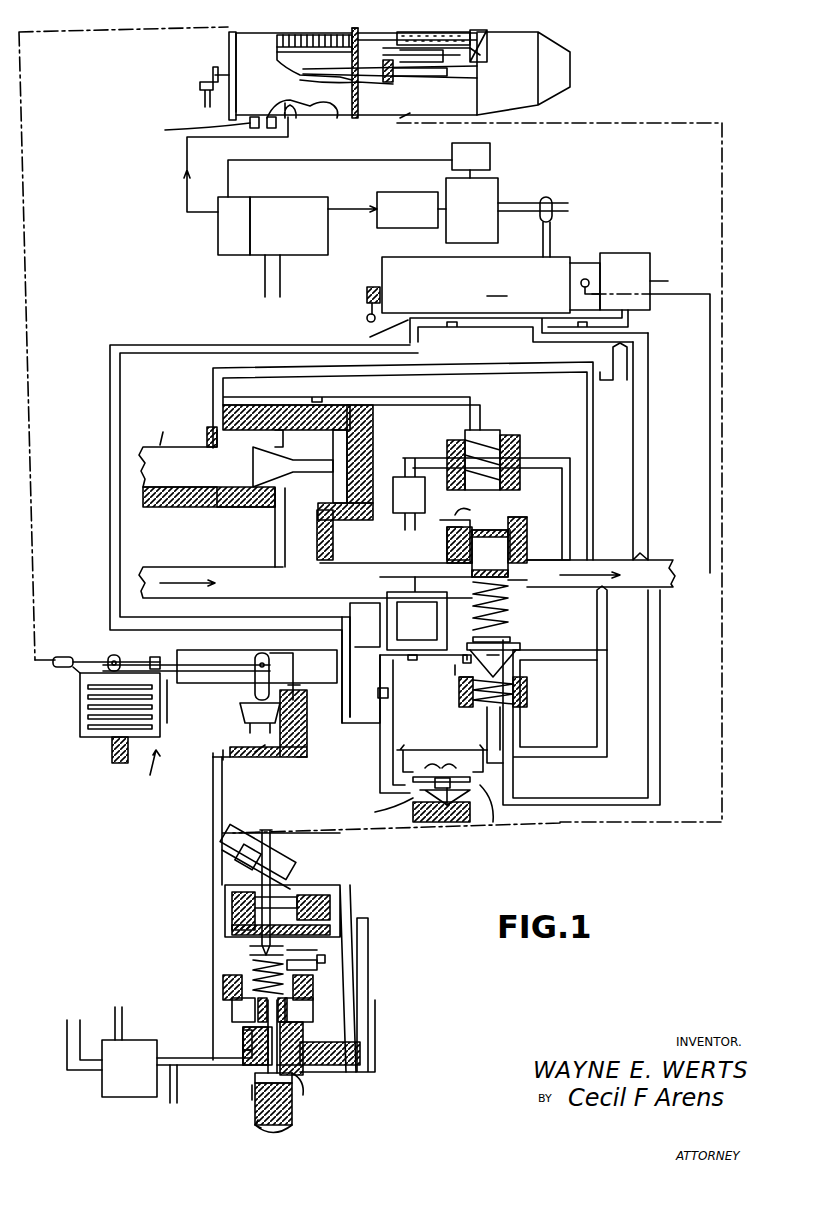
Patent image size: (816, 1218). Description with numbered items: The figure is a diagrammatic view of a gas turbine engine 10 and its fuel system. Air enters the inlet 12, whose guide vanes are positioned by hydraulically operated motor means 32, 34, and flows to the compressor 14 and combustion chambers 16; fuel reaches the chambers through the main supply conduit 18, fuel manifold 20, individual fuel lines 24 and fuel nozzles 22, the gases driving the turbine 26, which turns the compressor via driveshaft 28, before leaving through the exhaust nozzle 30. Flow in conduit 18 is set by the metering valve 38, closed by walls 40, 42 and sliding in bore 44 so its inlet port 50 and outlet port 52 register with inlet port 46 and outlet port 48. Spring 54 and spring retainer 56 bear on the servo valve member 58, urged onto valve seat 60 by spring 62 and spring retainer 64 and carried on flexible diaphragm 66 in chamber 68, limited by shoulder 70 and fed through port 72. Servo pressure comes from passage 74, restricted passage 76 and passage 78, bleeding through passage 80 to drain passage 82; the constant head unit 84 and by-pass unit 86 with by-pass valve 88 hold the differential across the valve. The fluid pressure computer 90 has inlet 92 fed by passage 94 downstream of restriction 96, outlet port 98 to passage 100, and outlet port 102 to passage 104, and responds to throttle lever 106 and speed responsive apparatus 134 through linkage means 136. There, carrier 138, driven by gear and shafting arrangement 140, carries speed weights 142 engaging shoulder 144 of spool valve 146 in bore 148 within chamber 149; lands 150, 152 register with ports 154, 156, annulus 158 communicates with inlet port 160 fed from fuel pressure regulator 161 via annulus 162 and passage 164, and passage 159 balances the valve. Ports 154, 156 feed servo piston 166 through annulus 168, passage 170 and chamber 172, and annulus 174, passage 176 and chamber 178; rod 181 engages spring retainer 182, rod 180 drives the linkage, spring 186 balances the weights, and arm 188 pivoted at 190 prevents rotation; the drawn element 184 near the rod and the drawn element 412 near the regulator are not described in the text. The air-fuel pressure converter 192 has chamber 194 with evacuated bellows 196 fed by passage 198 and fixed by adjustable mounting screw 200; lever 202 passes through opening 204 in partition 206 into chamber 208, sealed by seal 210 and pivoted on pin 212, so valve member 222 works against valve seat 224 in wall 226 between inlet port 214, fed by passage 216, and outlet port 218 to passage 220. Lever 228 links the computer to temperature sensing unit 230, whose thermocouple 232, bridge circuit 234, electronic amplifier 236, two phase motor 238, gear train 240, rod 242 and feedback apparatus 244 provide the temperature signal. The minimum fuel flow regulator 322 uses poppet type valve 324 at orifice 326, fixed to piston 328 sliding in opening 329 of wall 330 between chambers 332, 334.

The gas turbine engine 10 is at (420, 30).
The inlet 12 is at (227, 46).
The compressor 14 is at (300, 35).
The combustion chambers 16 is at (470, 32).
The main supply conduit 18 is at (160, 575).
The fuel manifold 20 is at (395, 123).
The fuel nozzles 22 is at (405, 32).
The individual fuel lines 24 is at (375, 33).
The turbine 26 is at (487, 53).
The driveshaft 28 is at (400, 84).
The exhaust nozzle 30 is at (570, 65).
The hydraulically operated motor means 32 is at (250, 125).
The hydraulically operated motor means 34 is at (276, 125).
The metering valve 38 is at (510, 580).
The wall 40 is at (505, 510).
The wall 42 is at (490, 546).
The bore 44 is at (513, 610).
The inlet port 46 is at (472, 581).
The outlet port 48 is at (515, 555).
The inlet port 50 is at (465, 515).
The outlet port 52 is at (512, 528).
The spring 54 is at (512, 638).
The spring retainer 56 is at (520, 648).
The servo valve member 58 is at (516, 660).
The valve seat 60 is at (465, 660).
The spring 62 is at (520, 707).
The spring retainer 64 is at (465, 690).
The flexible diaphragm 66 is at (515, 688).
The chamber 68 is at (465, 707).
The shoulder 70 is at (465, 675).
The port 72 is at (500, 712).
The passage 74 is at (380, 668).
The restricted passage 76 is at (410, 660).
The passage 78 is at (430, 638).
The passage 80 is at (574, 625).
The drain passage 82 is at (430, 370).
The constant head unit 84 is at (500, 430).
The servo operated fuel by-pass unit 86 is at (275, 515).
The by-pass valve 88 is at (265, 472).
The fluid pressure computer 90 is at (491, 285).
The inlet 92 is at (370, 330).
The passage 94 is at (150, 342).
The restriction 96 is at (378, 692).
The outlet port 98 is at (533, 322).
The passage 100 is at (650, 420).
The outlet port 102 is at (632, 312).
The passage 104 is at (622, 380).
The throttle lever 106 is at (365, 306).
The speed responsive apparatus 134 is at (198, 913).
The linkage means 136 is at (233, 834).
The carrier 138 is at (292, 1130).
The gear and shafting arrangement 140 is at (205, 78).
The speed weights 142 is at (253, 980).
The shoulder 144 is at (223, 990).
The spool valve 146 is at (232, 1010).
The bore 148 is at (232, 1022).
The chamber 149 is at (325, 980).
The land 150 is at (313, 1025).
The land 152 is at (292, 1110).
The port 154 is at (310, 1040).
The port 156 is at (300, 1085).
The annulus 158 is at (250, 1070).
The passage 159 is at (255, 1112).
The inlet port 160 is at (243, 1055).
The fuel pressure regulator 161 is at (120, 1090).
The annulus 162 is at (243, 1040).
The passage 164 is at (243, 1060).
The servo piston 166 is at (285, 898).
The annulus 168 is at (313, 1010).
The passage 170 is at (350, 905).
The chamber 172 is at (240, 900).
The annulus 174 is at (318, 1072).
The passage 176 is at (375, 1053).
The chamber 178 is at (232, 928).
The rod 180 is at (283, 893).
The rod 181 is at (330, 905).
The spring retainer 182 is at (250, 950).
The pin 184 is at (235, 870).
The spring 186 is at (362, 920).
The arm 188 is at (317, 952).
The pivot 190 is at (317, 965).
The air-fuel pressure converter 192 is at (154, 770).
The chamber 194 is at (80, 690).
The evacuated bellows 196 is at (88, 720).
The passage 198 is at (62, 657).
The adjustable mounting screw 200 is at (112, 755).
The lever 202 is at (236, 665).
The opening 204 is at (170, 700).
The partition 206 is at (178, 665).
The chamber 208 is at (300, 720).
The seal 210 is at (188, 743).
The pin 212 is at (155, 665).
The inlet port 214 is at (266, 665).
The passage 216 is at (300, 670).
The outlet port 218 is at (262, 750).
The passage 220 is at (306, 760).
The valve member 222 is at (240, 702).
The valve seat 224 is at (300, 692).
The wall 226 is at (208, 745).
The lever 228 is at (552, 228).
The temperature sensing unit 230 is at (354, 205).
The thermocouple 232 is at (317, 112).
The bridge circuit 234 is at (236, 248).
The electronic amplifier 236 is at (281, 205).
The two phase motor 238 is at (403, 200).
The gear train 240 is at (452, 232).
The rod 242 is at (518, 205).
The feedback apparatus 244 is at (480, 152).
The minimum fuel flow regulator 322 is at (480, 778).
The poppet type valve 324 is at (448, 805).
The orifice 326 is at (465, 805).
The piston 328 is at (413, 776).
The opening 329 is at (435, 791).
The wall 330 is at (495, 762).
The chamber 332 is at (403, 748).
The chamber 334 is at (493, 822).
The conduit 412 is at (172, 1103).